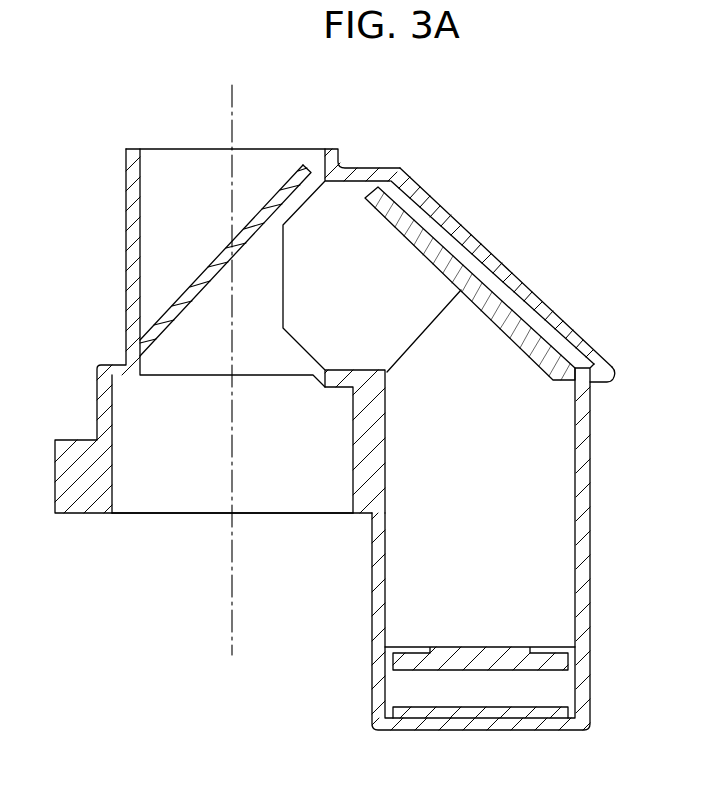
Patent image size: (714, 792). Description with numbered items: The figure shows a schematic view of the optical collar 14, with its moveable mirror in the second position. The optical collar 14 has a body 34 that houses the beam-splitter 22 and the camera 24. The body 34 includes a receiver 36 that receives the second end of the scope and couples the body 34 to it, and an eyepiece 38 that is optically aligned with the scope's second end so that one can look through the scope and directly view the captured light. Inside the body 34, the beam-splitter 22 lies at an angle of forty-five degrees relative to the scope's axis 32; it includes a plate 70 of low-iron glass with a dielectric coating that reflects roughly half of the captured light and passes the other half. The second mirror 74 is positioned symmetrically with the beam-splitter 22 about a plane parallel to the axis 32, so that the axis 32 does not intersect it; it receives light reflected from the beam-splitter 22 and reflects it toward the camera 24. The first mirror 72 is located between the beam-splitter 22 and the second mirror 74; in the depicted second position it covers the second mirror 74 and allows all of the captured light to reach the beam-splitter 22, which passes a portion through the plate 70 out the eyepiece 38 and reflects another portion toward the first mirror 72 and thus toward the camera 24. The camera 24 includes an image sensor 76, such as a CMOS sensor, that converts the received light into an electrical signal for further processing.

The optical collar 14 is at (125, 123).
The eyepiece 38 is at (192, 142).
The scope's axis 32 is at (233, 118).
The body 34 is at (372, 167).
The plate 70 is at (240, 232).
The beam-splitter 22 is at (210, 265).
The second mirror 74 is at (493, 270).
The first mirror 72 is at (522, 351).
The camera 24 is at (592, 572).
The receiver 36 is at (228, 520).
The image sensor 76 is at (508, 646).